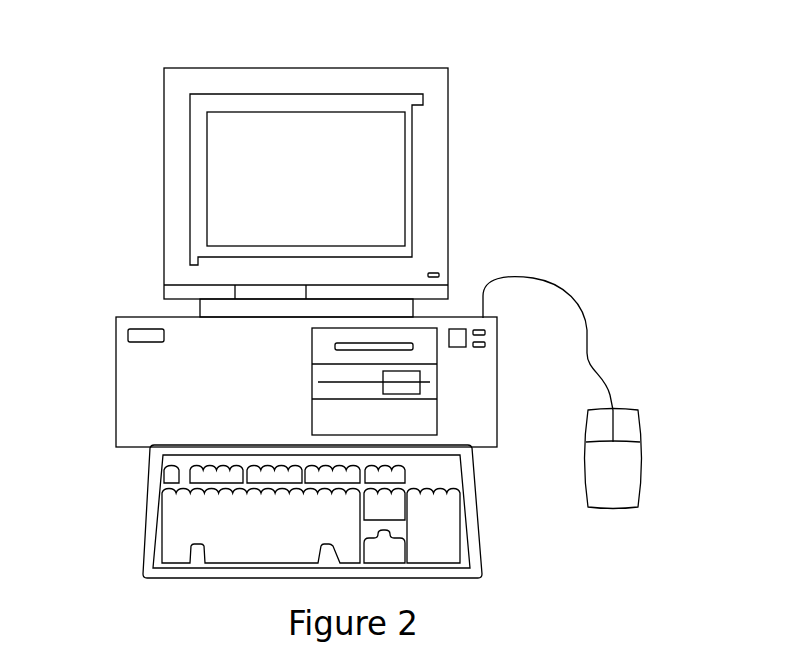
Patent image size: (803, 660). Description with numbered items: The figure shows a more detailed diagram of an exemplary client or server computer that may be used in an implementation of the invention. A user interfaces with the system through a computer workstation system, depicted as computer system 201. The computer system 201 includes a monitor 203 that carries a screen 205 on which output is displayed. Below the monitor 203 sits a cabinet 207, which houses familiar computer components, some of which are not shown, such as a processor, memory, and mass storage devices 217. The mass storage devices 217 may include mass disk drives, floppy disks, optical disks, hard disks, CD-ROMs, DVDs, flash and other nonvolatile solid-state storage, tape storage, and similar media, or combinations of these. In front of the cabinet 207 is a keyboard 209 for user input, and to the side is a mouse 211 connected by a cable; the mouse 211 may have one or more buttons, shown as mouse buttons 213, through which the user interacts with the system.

The computer system 201 is at (466, 49).
The monitor 203 is at (315, 192).
The screen 205 is at (225, 168).
The cabinet 207 is at (306, 342).
The keyboard 209 is at (190, 578).
The mouse 211 is at (594, 411).
The mouse buttons 213 is at (603, 432).
The mass storage devices 217 is at (430, 332).